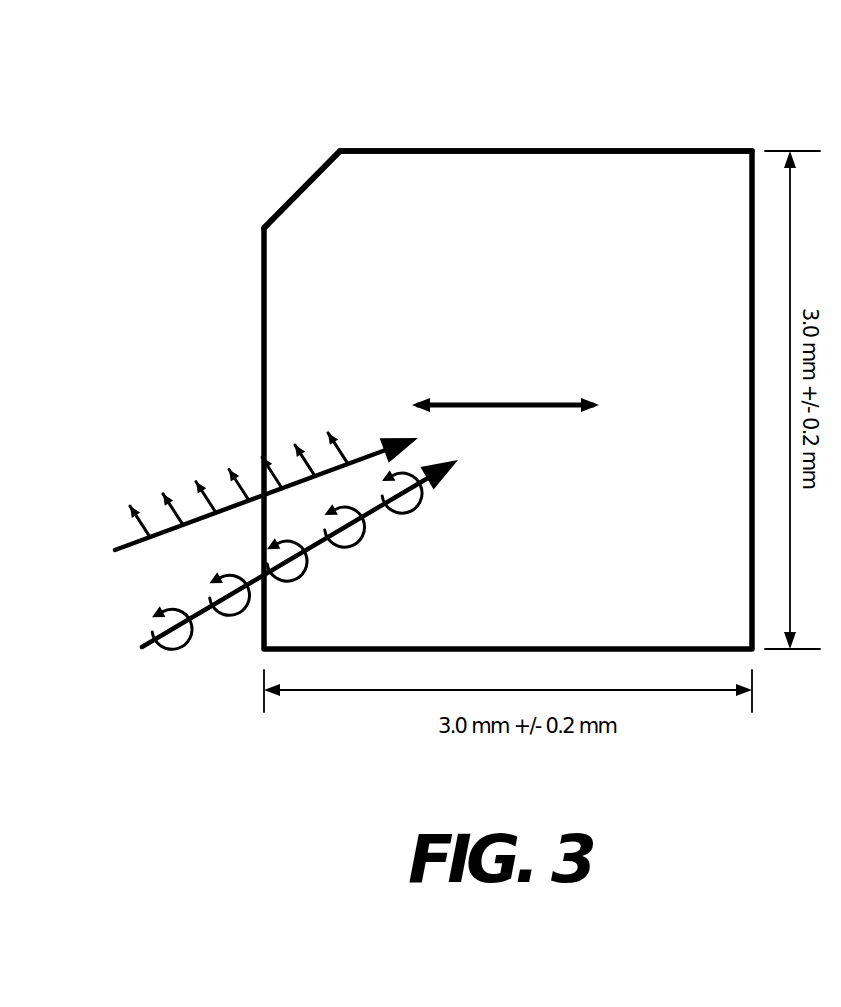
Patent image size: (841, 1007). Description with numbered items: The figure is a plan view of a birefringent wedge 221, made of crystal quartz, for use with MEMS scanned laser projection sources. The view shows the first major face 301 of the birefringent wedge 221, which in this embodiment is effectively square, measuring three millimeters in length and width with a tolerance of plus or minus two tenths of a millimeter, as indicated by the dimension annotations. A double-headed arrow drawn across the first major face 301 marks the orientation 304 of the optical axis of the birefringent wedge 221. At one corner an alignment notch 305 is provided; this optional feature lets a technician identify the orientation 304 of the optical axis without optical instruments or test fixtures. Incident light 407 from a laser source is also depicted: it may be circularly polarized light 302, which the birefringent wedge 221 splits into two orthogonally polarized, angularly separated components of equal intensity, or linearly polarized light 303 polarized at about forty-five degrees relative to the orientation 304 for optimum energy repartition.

The first major face 301 is at (575, 205).
The birefringent wedge 221 is at (474, 128).
The alignment notch 305 is at (268, 183).
The orientation 304 is at (502, 400).
The linearly polarized light 303 is at (165, 536).
The incident light 407 is at (177, 452).
The circularly polarized light 302 is at (312, 547).